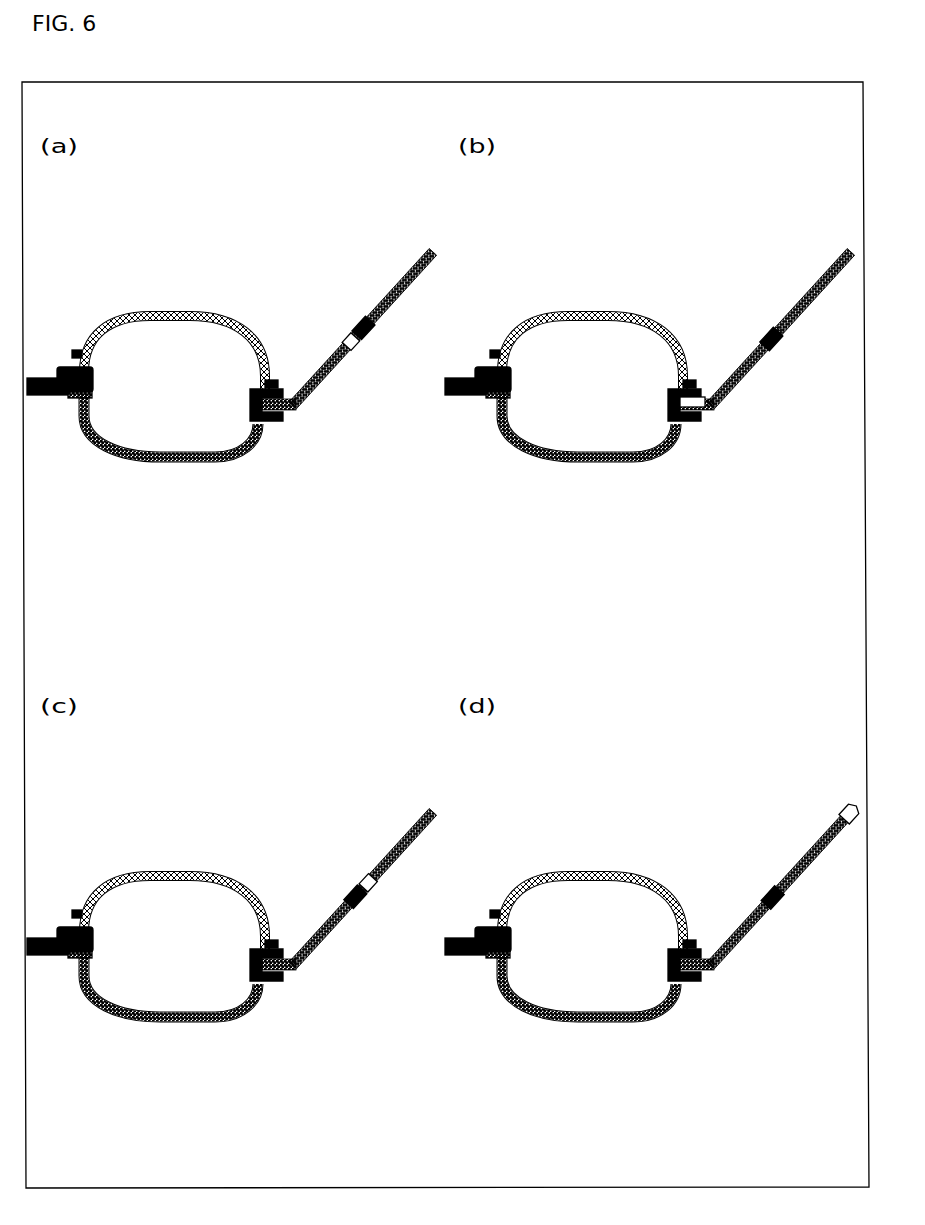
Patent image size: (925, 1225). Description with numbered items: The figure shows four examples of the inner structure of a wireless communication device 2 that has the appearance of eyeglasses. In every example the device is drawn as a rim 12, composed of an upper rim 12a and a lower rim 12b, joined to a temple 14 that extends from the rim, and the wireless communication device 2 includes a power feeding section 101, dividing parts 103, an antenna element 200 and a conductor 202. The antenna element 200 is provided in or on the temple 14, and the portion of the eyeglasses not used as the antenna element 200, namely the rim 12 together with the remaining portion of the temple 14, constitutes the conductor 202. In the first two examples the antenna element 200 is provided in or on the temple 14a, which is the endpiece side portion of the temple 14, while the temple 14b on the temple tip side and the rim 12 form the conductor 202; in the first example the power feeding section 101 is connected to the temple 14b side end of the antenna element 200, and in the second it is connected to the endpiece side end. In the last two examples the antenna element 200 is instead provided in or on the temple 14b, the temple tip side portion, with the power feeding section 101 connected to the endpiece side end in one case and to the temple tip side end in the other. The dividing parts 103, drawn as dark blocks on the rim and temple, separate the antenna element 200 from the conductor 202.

The wireless communication device 2 is at (359, 172).
The rim 12 is at (383, 713).
The upper rim 12a is at (150, 322).
The lower rim 12b is at (225, 452).
The temple 14 is at (558, 679).
The temple endpiece side portion 14a is at (338, 362).
The temple tip side portion 14b is at (373, 525).
The power feeding section 101 is at (347, 330).
The dividing parts 103 is at (45, 400).
The antenna element 200 is at (561, 698).
The conductor 202 is at (417, 732).